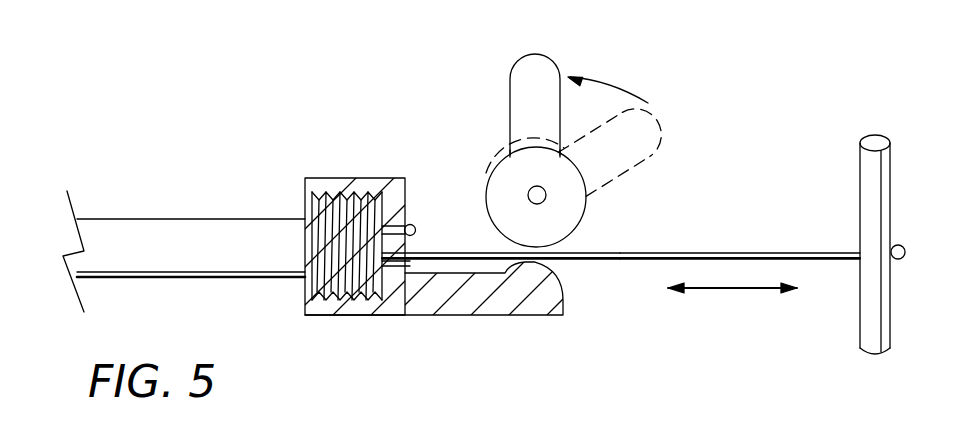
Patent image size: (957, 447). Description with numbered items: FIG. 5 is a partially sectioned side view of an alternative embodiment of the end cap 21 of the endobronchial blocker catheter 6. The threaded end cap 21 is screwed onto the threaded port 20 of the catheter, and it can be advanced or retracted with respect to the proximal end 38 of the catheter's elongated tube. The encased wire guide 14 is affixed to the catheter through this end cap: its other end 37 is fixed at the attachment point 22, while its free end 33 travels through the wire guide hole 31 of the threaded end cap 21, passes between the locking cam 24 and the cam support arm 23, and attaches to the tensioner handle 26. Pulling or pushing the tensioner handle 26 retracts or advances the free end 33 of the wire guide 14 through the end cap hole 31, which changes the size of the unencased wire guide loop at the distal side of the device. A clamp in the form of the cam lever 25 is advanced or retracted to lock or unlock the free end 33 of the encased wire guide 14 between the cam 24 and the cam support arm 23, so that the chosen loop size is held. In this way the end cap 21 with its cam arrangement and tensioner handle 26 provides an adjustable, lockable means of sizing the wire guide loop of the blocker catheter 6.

The endobronchial blocker catheter 6 is at (150, 205).
The encased wire guide 14 is at (738, 250).
The threaded port 20 is at (305, 284).
The threaded end cap 21 is at (372, 178).
The attachment point 22 is at (419, 226).
The cam support arm 23 is at (530, 316).
The locking cam 24 is at (583, 232).
The cam lever 25 is at (538, 56).
The tensioner handle 26 is at (880, 140).
The wire guide hole 31 is at (392, 266).
The free end 33 is at (828, 218).
The proximal end of the wire guide 37 is at (392, 200).
The proximal end 38 is at (481, 155).